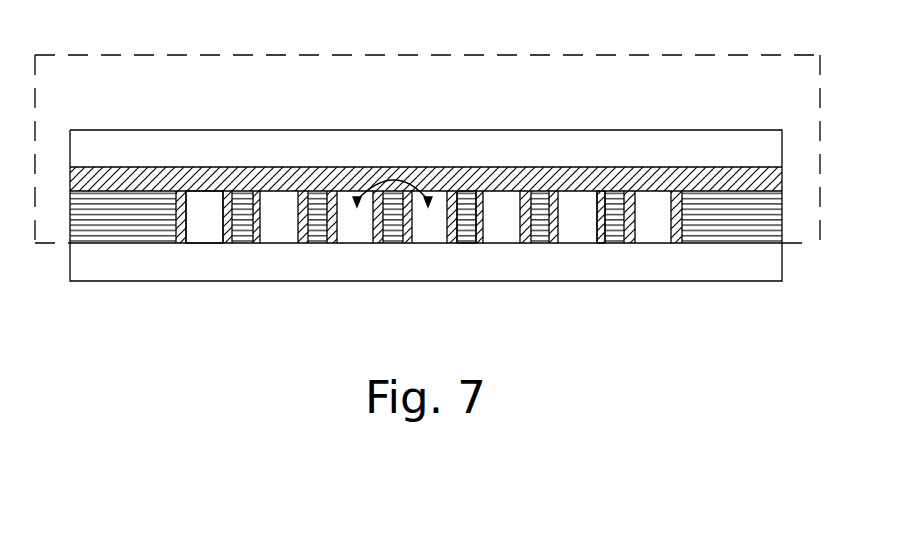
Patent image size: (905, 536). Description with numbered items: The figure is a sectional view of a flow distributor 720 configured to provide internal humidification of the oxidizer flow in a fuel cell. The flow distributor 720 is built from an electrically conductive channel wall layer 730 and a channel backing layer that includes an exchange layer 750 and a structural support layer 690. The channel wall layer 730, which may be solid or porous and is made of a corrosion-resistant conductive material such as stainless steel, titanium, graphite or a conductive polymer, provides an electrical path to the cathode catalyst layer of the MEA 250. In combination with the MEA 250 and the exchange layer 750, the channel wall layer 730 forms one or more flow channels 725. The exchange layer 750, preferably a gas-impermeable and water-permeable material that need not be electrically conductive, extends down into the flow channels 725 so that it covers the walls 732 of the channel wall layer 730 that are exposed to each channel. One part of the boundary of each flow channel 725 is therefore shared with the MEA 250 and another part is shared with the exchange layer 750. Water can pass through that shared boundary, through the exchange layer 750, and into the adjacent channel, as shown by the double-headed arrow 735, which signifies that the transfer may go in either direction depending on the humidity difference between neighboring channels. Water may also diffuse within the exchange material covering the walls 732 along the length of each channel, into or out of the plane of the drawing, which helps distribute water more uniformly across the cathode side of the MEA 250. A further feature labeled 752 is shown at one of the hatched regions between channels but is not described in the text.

The flow distributor 720 is at (98, 88).
The structural support layer 690 is at (130, 158).
The MEA 250 is at (130, 273).
The exchange layer 750 is at (653, 170).
The flow channel 725 is at (202, 222).
The channel wall layer 730 is at (723, 243).
The walls 732 is at (463, 225).
The partition wall 752 is at (597, 228).
The double-headed arrow 735 is at (400, 178).